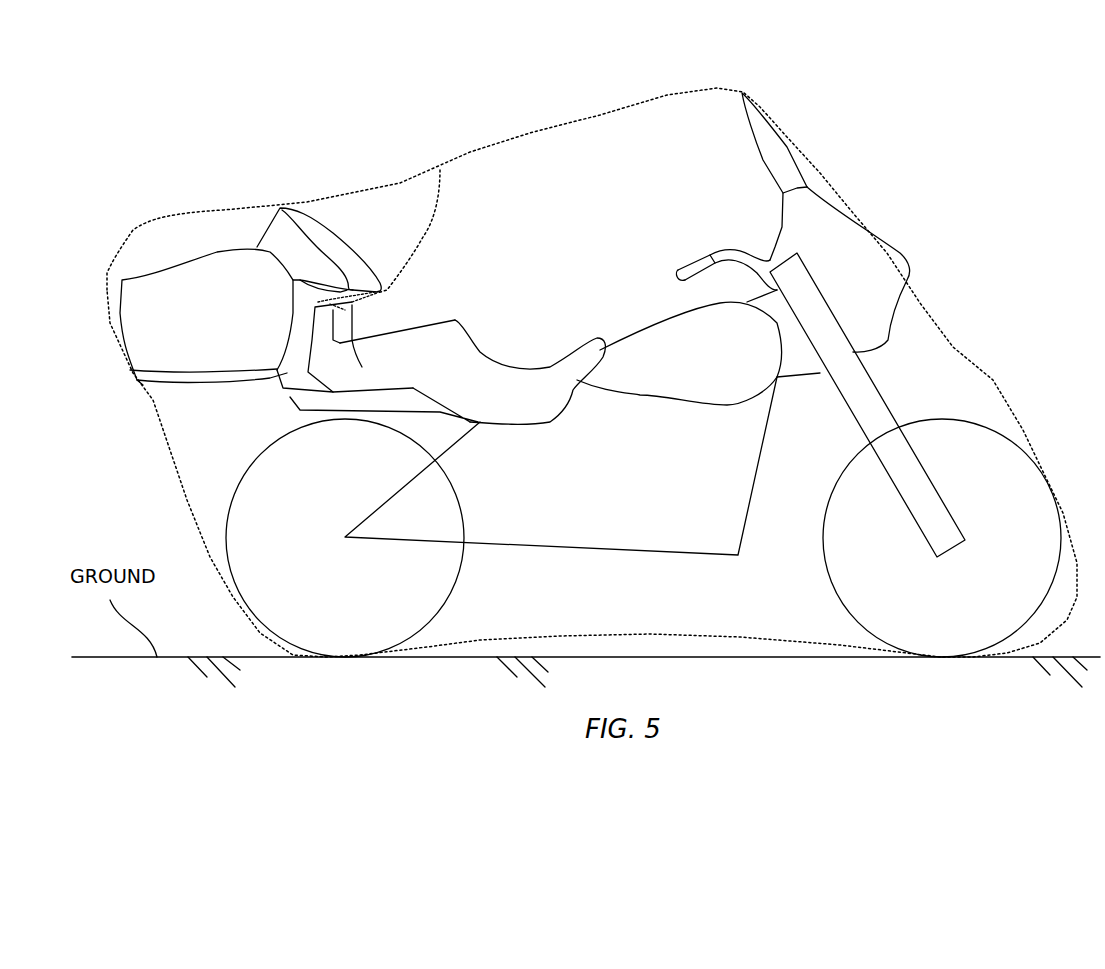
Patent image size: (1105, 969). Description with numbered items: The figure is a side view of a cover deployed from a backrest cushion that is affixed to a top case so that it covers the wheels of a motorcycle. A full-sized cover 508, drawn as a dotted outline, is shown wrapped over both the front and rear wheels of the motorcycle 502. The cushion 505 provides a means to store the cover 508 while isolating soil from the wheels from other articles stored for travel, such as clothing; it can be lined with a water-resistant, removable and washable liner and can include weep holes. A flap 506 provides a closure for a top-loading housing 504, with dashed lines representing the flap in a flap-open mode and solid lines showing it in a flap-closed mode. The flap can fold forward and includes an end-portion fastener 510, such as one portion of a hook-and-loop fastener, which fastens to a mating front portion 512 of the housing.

The motorcycle 502 is at (252, 518).
The top-loading housing 504 is at (318, 324).
The cushion 505 is at (306, 339).
The flap 506 is at (355, 292).
The cover 508 is at (548, 130).
The end-portion fastener 510 is at (360, 308).
The front portion 512 is at (334, 341).